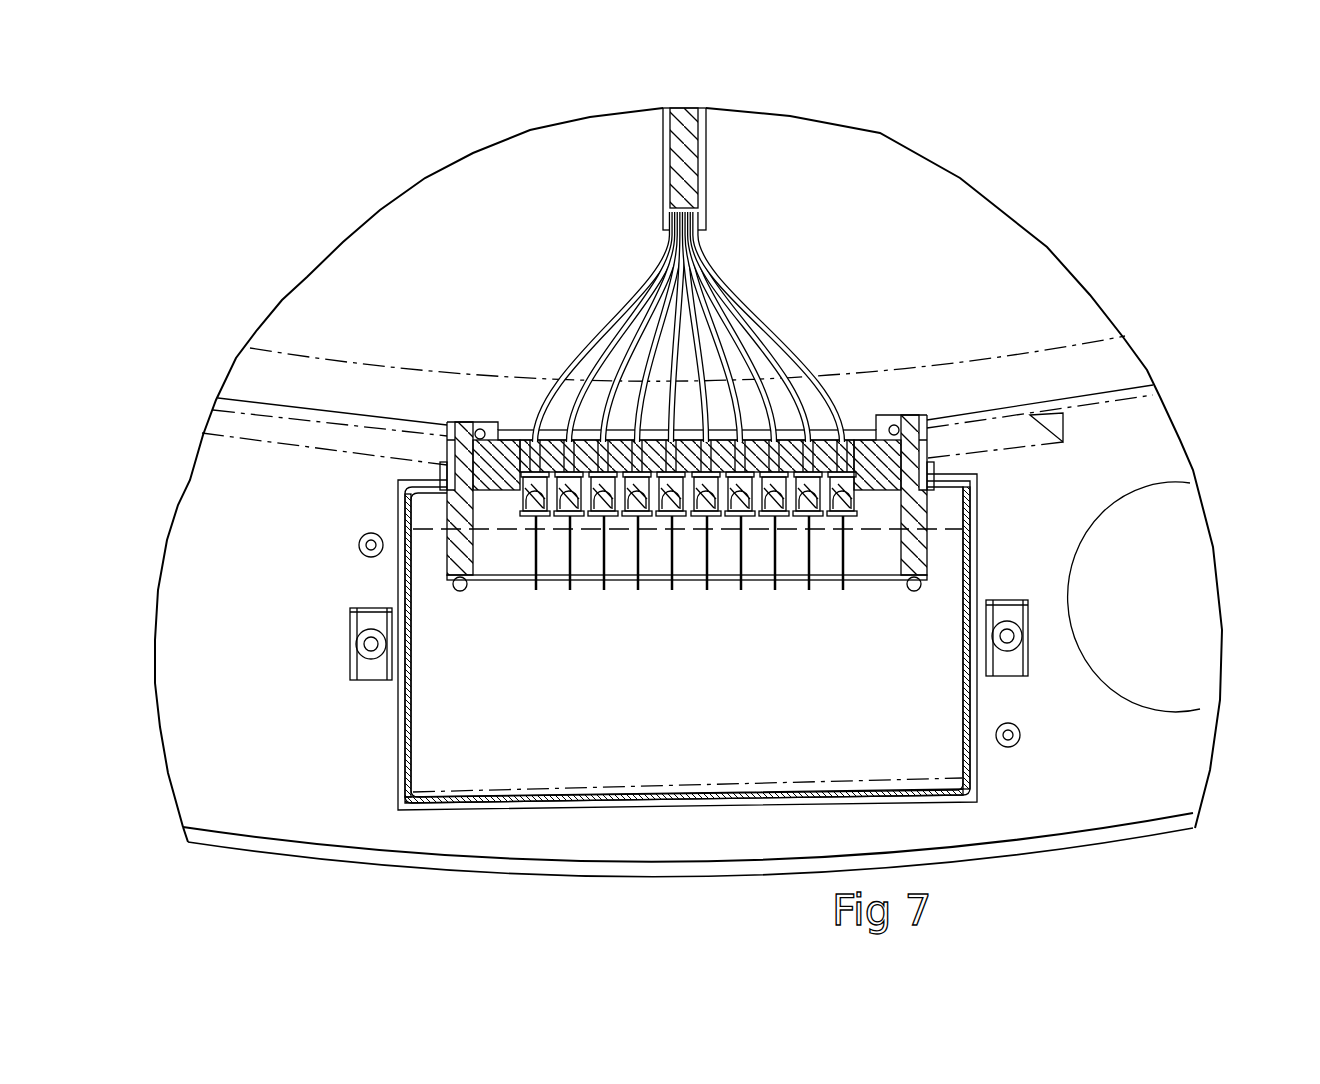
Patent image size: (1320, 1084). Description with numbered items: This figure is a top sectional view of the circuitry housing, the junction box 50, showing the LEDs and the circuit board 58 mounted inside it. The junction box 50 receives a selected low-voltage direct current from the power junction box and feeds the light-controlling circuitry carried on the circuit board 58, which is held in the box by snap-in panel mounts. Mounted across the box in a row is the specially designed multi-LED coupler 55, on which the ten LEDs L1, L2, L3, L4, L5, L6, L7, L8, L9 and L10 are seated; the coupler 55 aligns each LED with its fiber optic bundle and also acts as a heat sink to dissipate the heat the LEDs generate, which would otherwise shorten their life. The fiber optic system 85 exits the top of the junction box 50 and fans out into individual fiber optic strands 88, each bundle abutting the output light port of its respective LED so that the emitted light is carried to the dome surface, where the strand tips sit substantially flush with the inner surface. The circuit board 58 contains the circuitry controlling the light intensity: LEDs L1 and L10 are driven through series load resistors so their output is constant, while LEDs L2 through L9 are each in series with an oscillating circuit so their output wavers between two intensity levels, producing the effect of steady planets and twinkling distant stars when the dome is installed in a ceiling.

The circuitry junction box 50 is at (975, 765).
The multi-LED coupler 55 is at (905, 445).
The circuit board 58 is at (505, 579).
The fiber optic system 85 is at (700, 178).
The fiber optic strands 88 is at (558, 370).
The LED L1 is at (535, 516).
The LED L2 is at (569, 516).
The LED L3 is at (603, 516).
The LED L4 is at (637, 516).
The LED L5 is at (671, 516).
The LED L6 is at (706, 516).
The LED L7 is at (740, 516).
The LED L8 is at (774, 516).
The LED L9 is at (808, 516).
The LED L10 is at (842, 516).